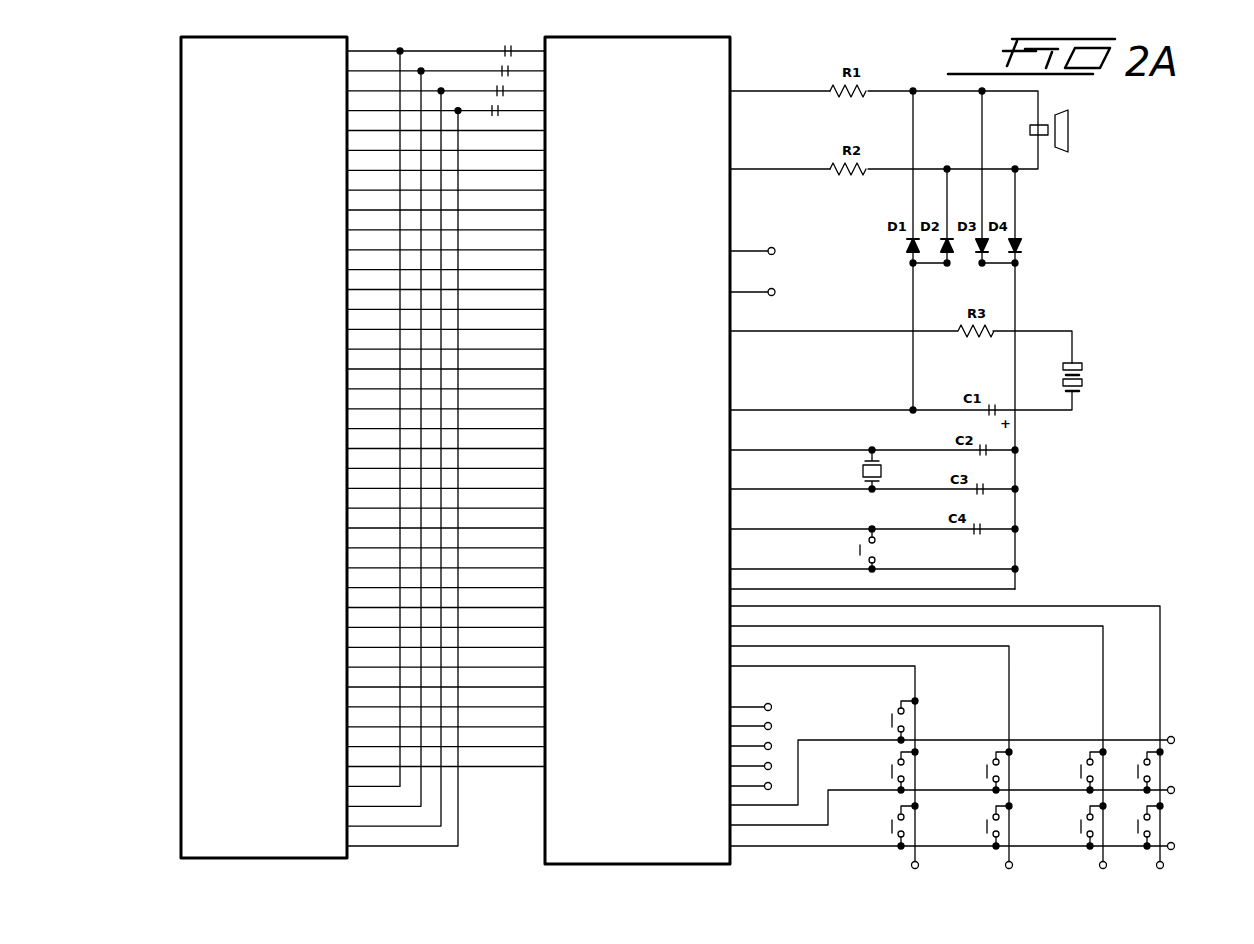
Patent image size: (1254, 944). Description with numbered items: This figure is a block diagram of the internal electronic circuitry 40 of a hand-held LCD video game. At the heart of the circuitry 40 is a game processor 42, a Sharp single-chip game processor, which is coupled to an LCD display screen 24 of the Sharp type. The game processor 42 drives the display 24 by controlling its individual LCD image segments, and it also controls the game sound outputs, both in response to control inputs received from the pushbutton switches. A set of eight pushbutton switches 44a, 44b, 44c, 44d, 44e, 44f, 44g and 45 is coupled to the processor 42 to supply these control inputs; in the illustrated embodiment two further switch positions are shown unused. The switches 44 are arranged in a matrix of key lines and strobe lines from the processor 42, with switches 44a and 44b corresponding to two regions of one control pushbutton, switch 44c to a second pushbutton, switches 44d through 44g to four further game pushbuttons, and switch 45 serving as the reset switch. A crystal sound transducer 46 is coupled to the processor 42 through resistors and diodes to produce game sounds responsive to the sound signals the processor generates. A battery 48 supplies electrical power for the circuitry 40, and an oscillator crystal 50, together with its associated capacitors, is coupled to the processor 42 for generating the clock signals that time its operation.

The LCD display screen 24 is at (181, 818).
The internal electronic circuitry 40 is at (492, 806).
The game processor 42 is at (545, 827).
The pushbutton switches 44 is at (952, 742).
The pushbutton switch 44a is at (901, 701).
The pushbutton switch 44b is at (901, 752).
The pushbutton switch 44c is at (901, 806).
The pushbutton switch 44d is at (996, 752).
The pushbutton switch 44e is at (996, 806).
The pushbutton switch 44f is at (1090, 752).
The pushbutton switch 44g is at (1090, 806).
The pushbutton switch 45 is at (878, 552).
The crystal sound transducer 46 is at (1043, 120).
The battery 48 is at (1078, 362).
The oscillator crystal 50 is at (876, 453).